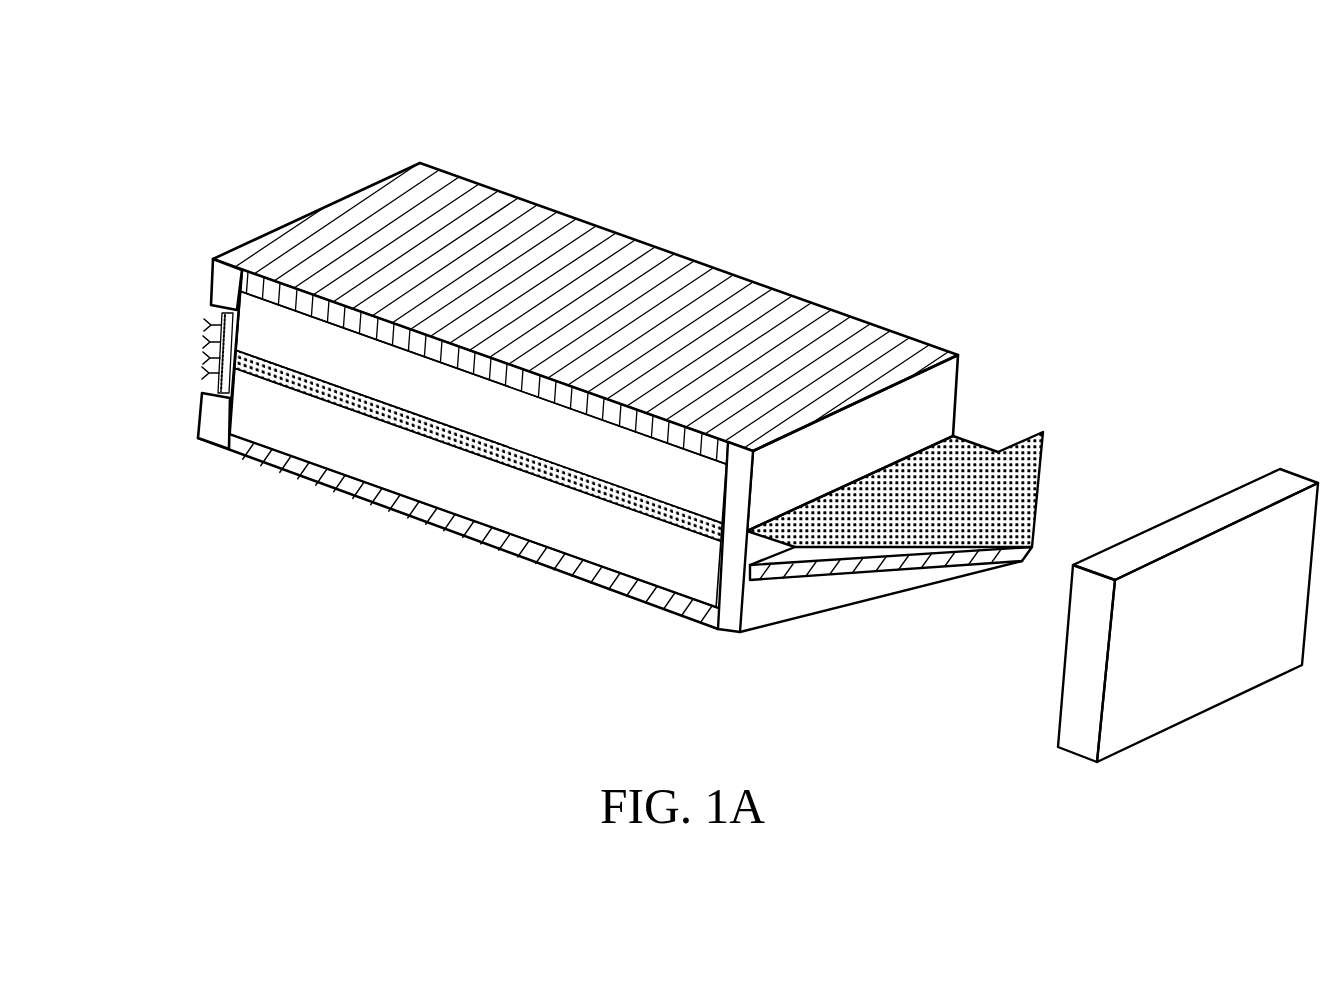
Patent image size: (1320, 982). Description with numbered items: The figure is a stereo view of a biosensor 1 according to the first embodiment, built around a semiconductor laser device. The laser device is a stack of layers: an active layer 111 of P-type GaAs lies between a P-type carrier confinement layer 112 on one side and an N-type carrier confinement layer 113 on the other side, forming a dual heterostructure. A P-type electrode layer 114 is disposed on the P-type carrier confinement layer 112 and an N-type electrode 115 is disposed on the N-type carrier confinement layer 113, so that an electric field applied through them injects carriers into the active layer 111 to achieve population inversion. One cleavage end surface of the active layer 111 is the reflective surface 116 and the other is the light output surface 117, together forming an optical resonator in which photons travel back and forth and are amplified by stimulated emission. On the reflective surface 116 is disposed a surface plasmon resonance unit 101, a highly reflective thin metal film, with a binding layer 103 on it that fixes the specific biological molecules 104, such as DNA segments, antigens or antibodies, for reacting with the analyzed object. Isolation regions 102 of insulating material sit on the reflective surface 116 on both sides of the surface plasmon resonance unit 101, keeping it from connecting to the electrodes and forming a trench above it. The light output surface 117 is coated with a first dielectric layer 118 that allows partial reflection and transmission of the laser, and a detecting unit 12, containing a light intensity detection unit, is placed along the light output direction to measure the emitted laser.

The biosensor 1 is at (112, 78).
The detecting unit 12 is at (1242, 507).
The surface plasmon resonance unit 101 is at (232, 402).
The isolation region 102 is at (222, 290).
The binding layer 103 is at (222, 380).
The specific biological molecules 104 is at (212, 332).
The active layer 111 is at (403, 420).
The P-type carrier confinement layer 112 is at (385, 380).
The N-type carrier confinement layer 113 is at (487, 497).
The P-type electrode layer 114 is at (570, 262).
The N-type electrode 115 is at (603, 585).
The reflective surface 116 is at (245, 380).
The light output surface 117 is at (730, 545).
The first dielectric layer 118 is at (905, 418).